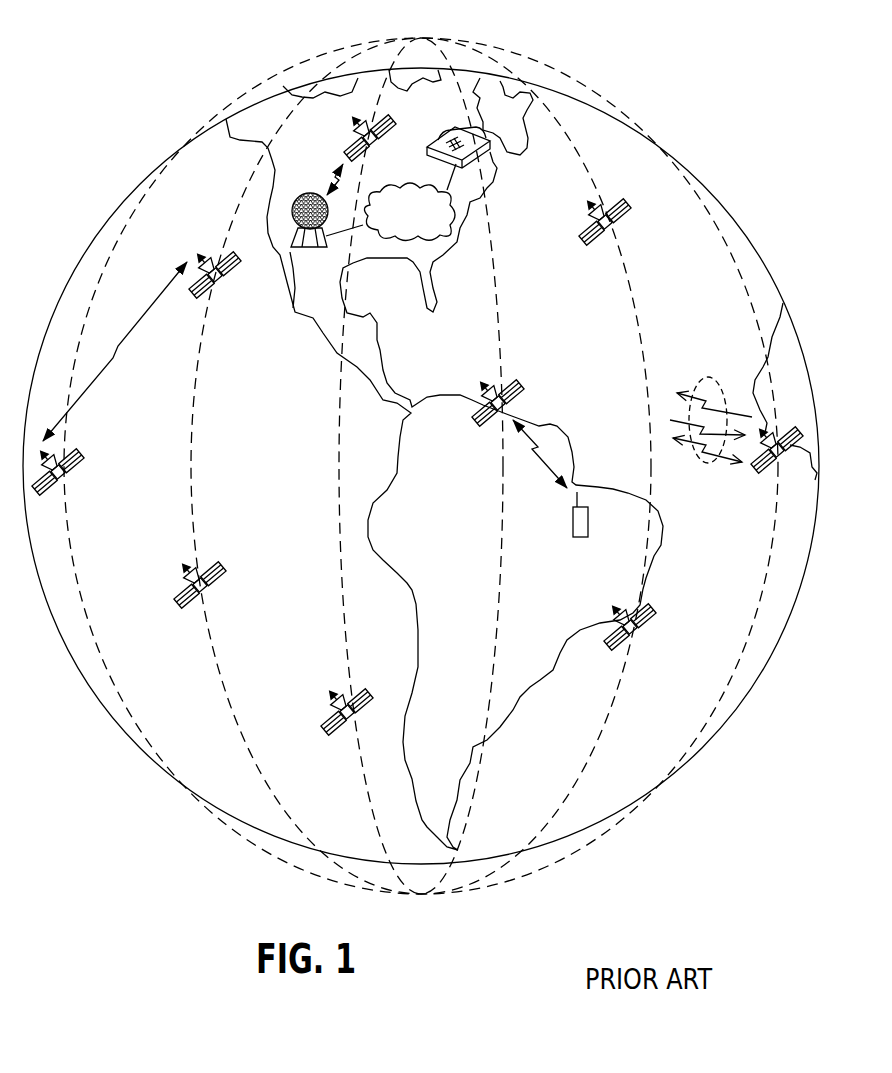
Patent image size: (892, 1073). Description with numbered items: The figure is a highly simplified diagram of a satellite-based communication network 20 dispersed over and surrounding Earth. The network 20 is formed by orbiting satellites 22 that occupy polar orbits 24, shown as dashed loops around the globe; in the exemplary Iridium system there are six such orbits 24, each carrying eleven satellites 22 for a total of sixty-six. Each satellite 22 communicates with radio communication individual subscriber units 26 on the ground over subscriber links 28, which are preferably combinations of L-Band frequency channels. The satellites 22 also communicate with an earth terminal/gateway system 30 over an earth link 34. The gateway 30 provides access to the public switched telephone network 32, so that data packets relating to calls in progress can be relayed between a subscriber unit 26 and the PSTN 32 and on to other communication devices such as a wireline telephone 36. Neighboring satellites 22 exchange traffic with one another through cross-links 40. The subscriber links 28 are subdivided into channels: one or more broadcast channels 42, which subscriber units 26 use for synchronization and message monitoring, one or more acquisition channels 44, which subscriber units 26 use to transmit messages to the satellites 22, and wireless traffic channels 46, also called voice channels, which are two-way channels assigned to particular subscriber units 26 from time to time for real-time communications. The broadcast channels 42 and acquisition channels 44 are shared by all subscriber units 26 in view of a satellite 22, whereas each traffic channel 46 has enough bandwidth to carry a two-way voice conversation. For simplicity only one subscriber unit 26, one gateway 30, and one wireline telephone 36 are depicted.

The satellite-based communication network 20 is at (737, 893).
The satellite 22 is at (218, 583).
The orbit 24 is at (213, 653).
The individual subscriber unit 26 is at (573, 517).
The subscriber link 28 is at (537, 430).
The earth terminal/gateway system 30 is at (292, 204).
The public switched telephone network 32 is at (444, 226).
The earth link 34 is at (334, 175).
The wireline telephone 36 is at (490, 155).
The cross-link 40 is at (100, 363).
The broadcast channel 42 is at (690, 392).
The acquisition channel 44 is at (675, 418).
The traffic channel 46 is at (702, 448).